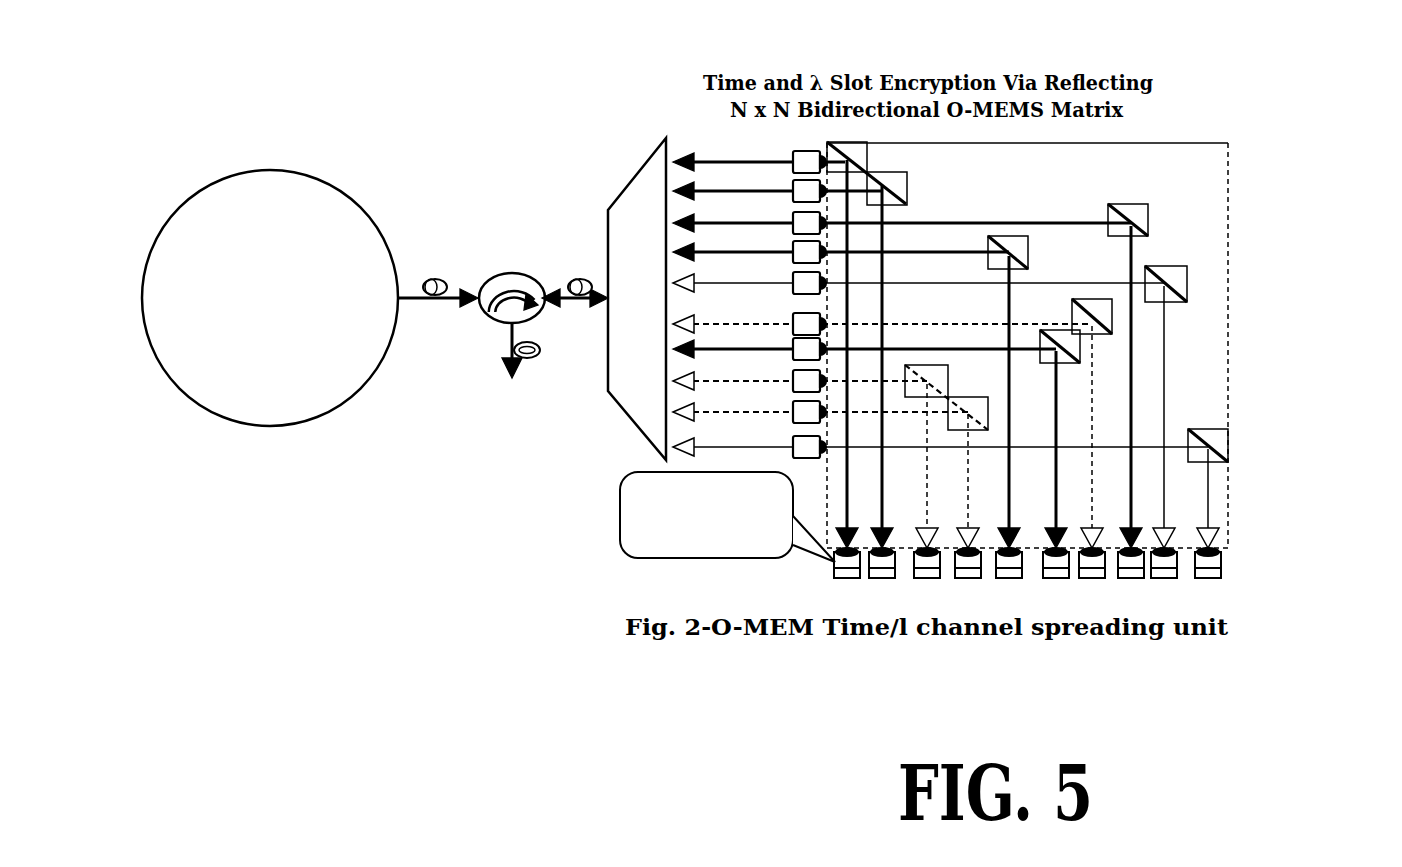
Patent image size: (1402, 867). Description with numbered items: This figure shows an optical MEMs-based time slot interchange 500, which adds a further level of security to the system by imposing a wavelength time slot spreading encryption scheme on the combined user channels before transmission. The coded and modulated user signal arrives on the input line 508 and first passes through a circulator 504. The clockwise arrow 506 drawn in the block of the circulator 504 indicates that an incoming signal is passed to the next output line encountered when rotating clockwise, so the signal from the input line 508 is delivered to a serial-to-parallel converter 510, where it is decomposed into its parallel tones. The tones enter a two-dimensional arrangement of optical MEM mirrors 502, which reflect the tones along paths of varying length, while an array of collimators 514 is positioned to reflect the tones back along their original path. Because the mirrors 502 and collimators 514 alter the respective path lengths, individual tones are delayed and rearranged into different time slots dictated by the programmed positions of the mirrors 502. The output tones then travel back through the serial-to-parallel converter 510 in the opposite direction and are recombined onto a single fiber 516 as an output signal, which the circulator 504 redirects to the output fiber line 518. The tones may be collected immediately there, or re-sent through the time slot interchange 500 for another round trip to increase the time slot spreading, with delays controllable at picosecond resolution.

The time slot interchange 500 is at (1187, 193).
The optical MEM mirrors 502 is at (1228, 450).
The circulator 504 is at (493, 281).
The clockwise arrow 506 is at (494, 325).
The input line 508 is at (166, 222).
The serial-to-parallel converter 510 is at (627, 187).
The collimators 514 is at (1223, 573).
The single fiber 516 is at (572, 285).
The output fiber line 518 is at (508, 378).